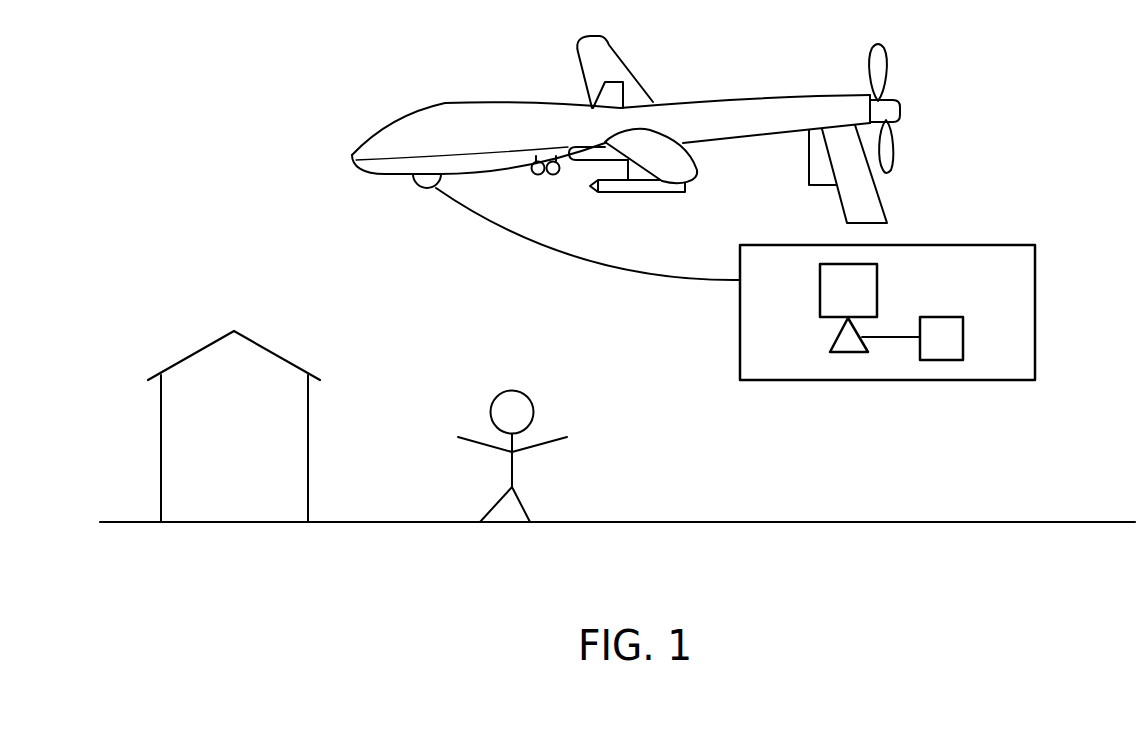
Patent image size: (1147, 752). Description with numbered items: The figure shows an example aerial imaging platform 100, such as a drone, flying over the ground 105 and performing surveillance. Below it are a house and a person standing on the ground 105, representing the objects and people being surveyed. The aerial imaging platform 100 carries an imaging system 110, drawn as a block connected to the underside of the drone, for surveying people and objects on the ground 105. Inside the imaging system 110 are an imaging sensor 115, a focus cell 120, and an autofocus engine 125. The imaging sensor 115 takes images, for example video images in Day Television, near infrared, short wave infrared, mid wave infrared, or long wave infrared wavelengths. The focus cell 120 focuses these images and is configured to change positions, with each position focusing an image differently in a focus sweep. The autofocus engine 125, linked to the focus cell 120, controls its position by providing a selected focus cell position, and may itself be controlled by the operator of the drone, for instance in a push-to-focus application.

The aerial imaging platform 100 is at (737, 95).
The ground 105 is at (1035, 563).
The imaging system 110 is at (772, 284).
The imaging sensor 115 is at (877, 290).
The focus cell 120 is at (832, 345).
The autofocus engine 125 is at (963, 327).